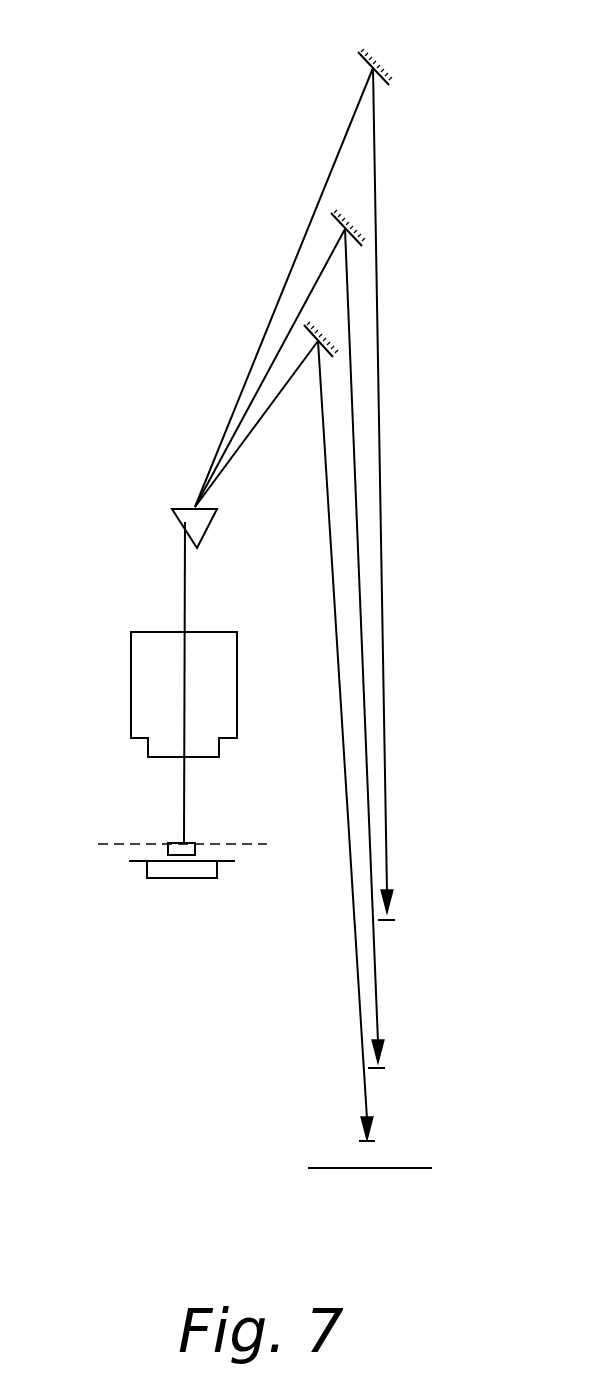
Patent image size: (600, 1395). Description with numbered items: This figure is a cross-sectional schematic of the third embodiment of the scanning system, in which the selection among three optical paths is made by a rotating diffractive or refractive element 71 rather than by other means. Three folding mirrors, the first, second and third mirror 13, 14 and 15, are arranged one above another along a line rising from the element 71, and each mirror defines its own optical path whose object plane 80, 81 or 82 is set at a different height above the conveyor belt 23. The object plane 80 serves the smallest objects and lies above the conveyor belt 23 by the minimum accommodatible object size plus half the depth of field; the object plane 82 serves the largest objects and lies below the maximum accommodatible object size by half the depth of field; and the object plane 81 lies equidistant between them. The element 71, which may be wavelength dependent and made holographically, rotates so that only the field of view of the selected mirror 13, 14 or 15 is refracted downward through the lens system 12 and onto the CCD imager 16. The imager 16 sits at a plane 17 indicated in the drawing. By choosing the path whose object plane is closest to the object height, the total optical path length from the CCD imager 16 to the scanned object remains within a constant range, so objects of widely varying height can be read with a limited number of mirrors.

The lens system 12 is at (140, 698).
The first mirror 13 is at (375, 62).
The second mirror 14 is at (347, 226).
The third mirror 15 is at (320, 341).
The CCD imager 16 is at (160, 862).
The detector plane 17 is at (232, 843).
The conveyor belt 23 is at (327, 1168).
The rotating diffractive or refractive element 71 is at (185, 508).
The object plane 80 is at (375, 1139).
The object plane 81 is at (385, 1067).
The object plane 82 is at (395, 920).